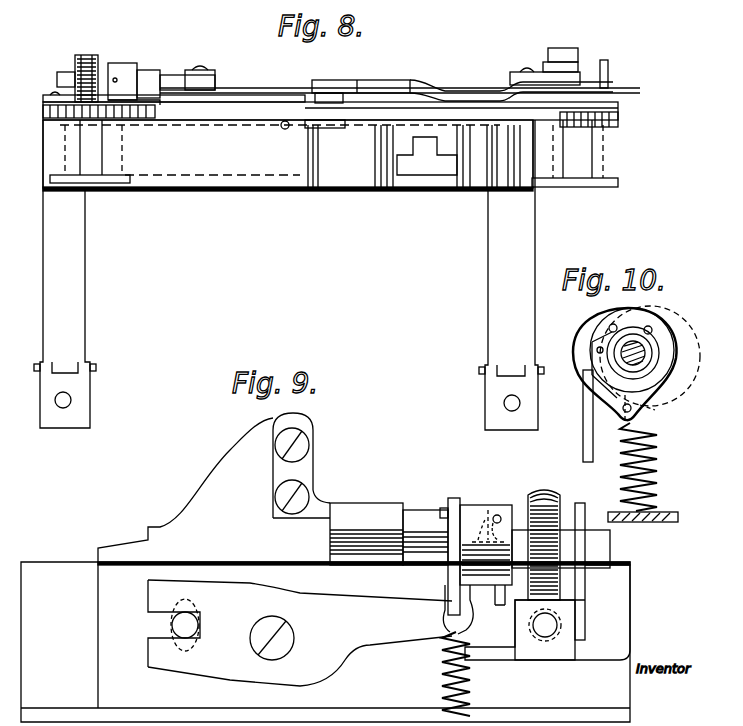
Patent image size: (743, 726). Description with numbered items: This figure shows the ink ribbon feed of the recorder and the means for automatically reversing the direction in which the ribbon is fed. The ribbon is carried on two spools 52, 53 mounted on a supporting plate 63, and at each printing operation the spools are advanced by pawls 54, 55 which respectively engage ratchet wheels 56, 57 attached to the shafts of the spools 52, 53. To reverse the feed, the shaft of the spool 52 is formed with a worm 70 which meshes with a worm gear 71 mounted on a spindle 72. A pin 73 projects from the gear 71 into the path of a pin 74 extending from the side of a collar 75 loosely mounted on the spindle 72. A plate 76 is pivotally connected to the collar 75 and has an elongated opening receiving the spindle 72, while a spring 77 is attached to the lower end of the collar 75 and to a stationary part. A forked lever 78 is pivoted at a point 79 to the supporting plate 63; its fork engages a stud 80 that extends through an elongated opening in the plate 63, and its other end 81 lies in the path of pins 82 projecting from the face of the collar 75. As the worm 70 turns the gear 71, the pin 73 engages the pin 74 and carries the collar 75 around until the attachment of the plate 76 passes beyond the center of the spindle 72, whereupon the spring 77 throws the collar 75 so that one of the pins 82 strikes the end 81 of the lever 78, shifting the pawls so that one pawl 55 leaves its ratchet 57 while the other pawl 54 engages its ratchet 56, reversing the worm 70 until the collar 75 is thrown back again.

In FIG. 8, the spool 52 is at (102, 159).
In FIG. 8, the spool 53 is at (590, 154).
In FIG. 8, the pawl 54 is at (234, 110).
In FIG. 8, the pawl 55 is at (460, 132).
In FIG. 8, the ratchet wheel 56 is at (52, 118).
In FIG. 8, the ratchet wheel 57 is at (618, 120).
In FIG. 9, the supporting plate 63 is at (325, 642).
In FIG. 9, the worm 70 is at (557, 624).
In FIG. 8, the worm gear 71 is at (88, 58).
In FIG. 9, the worm gear 71 is at (544, 495).
In FIG. 8, the spindle 72 is at (174, 80).
In FIG. 9, the spindle 72 is at (366, 528).
In FIG. 10, the spindle 72 is at (645, 351).
In FIG. 9, the pin 73 is at (585, 598).
In FIG. 9, the pin 74 is at (500, 606).
In FIG. 8, the collar 75 is at (120, 66).
In FIG. 9, the collar 75 is at (470, 515).
In FIG. 10, the collar 75 is at (612, 368).
In FIG. 9, the plate 76 is at (450, 580).
In FIG. 10, the plate 76 is at (592, 332).
In FIG. 9, the spring 77 is at (470, 686).
In FIG. 10, the spring 77 is at (658, 456).
In FIG. 9, the forked lever 78 is at (300, 633).
In FIG. 9, the pivot point 79 is at (284, 640).
In FIG. 9, the stud 80 is at (192, 625).
In FIG. 8, the end 81 is at (122, 108).
In FIG. 9, the end 81 is at (490, 530).
In FIG. 10, the end 81 is at (590, 350).
In FIG. 9, the pins 82 is at (500, 516).
In FIG. 10, the pins 82 is at (590, 342).